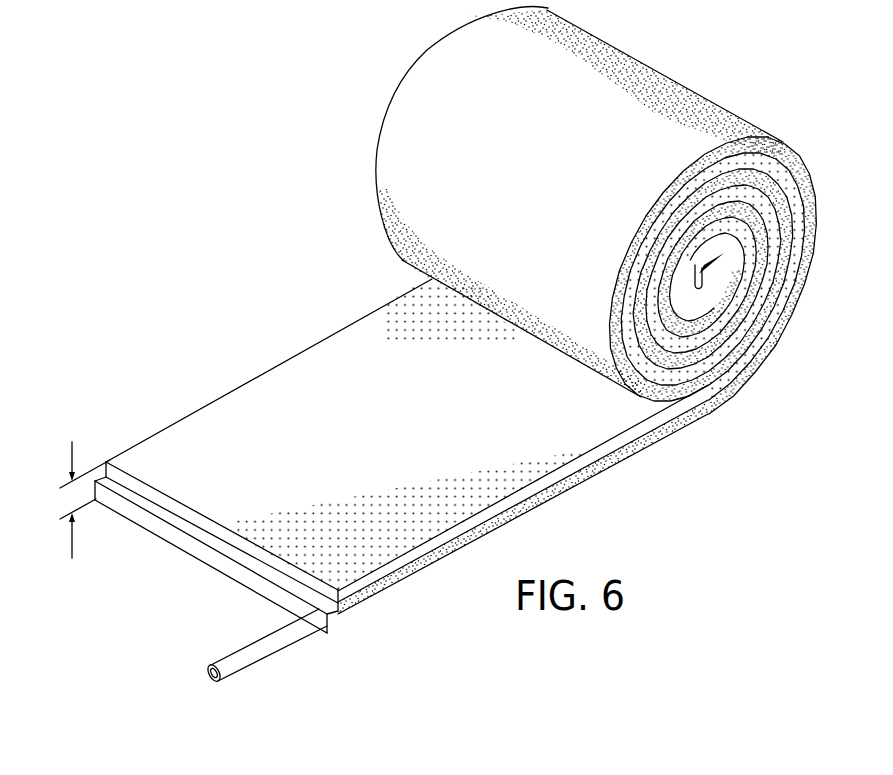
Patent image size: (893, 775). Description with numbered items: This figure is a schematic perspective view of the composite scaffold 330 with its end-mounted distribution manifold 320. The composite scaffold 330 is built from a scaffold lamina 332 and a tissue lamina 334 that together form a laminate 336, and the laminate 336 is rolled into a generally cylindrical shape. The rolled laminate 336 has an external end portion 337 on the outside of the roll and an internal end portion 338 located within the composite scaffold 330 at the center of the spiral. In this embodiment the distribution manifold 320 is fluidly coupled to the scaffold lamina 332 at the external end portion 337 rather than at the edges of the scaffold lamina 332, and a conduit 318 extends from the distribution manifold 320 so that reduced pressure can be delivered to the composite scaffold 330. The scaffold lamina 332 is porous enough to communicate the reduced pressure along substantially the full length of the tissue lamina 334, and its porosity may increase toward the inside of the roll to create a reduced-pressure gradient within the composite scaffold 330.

The conduit 318 is at (254, 661).
The distribution manifold 320 is at (198, 558).
The composite scaffold 330 is at (692, 84).
The scaffold lamina 332 is at (604, 478).
The tissue lamina 334 is at (164, 441).
The laminate 336 is at (72, 442).
The external end portion 337 is at (338, 611).
The internal end portion 338 is at (703, 264).